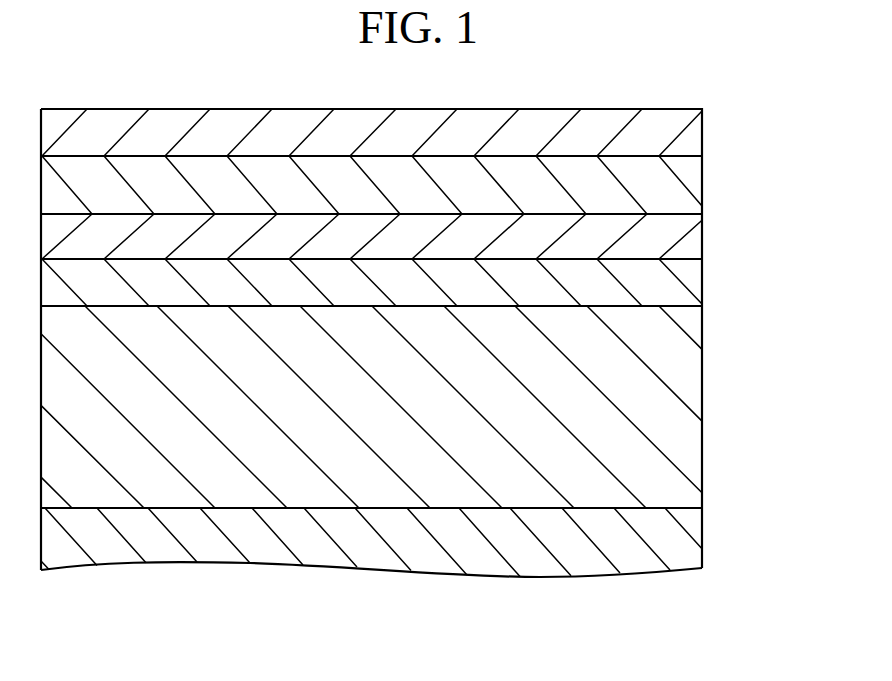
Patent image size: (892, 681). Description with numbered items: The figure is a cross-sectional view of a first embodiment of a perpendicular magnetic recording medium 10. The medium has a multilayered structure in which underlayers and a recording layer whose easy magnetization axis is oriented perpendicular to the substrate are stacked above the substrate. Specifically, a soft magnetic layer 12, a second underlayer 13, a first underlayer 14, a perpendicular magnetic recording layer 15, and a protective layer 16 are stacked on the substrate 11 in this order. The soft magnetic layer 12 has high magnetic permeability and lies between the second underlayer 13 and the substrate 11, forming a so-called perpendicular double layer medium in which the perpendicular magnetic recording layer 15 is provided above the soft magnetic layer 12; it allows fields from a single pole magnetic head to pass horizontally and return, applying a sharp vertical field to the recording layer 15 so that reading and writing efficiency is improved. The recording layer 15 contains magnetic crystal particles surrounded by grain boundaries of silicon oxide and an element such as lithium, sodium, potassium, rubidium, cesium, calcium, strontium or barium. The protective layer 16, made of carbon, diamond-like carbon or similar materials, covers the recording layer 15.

The perpendicular magnetic recording medium 10 is at (703, 102).
The substrate 11 is at (697, 540).
The soft magnetic layer 12 is at (698, 400).
The second underlayer 13 is at (680, 306).
The first underlayer 14 is at (693, 243).
The perpendicular magnetic recording layer 15 is at (693, 177).
The protective layer 16 is at (693, 132).